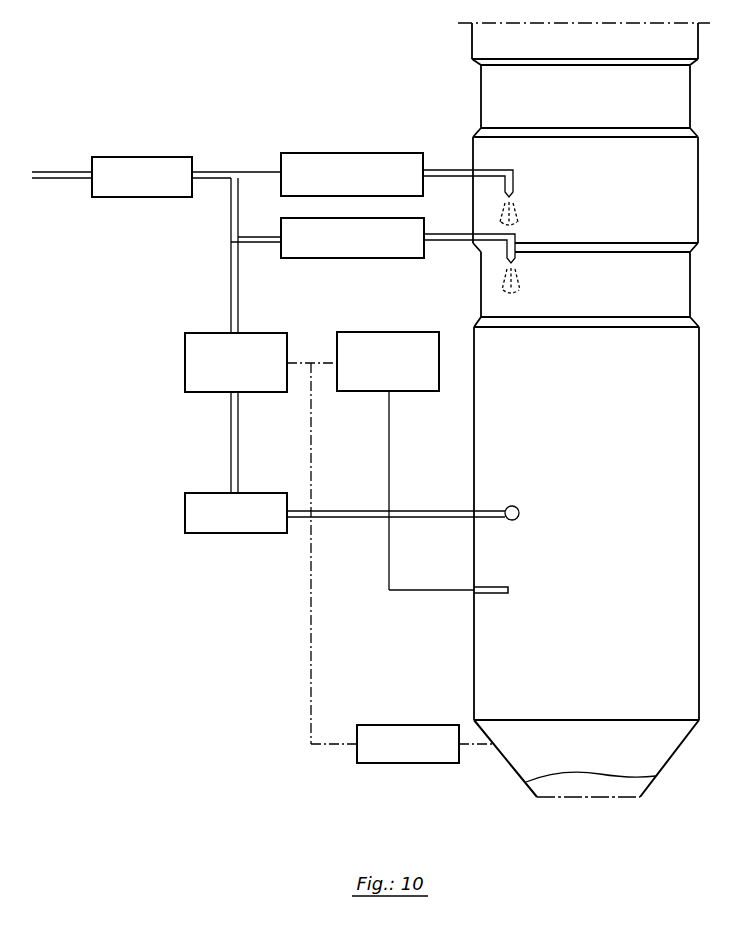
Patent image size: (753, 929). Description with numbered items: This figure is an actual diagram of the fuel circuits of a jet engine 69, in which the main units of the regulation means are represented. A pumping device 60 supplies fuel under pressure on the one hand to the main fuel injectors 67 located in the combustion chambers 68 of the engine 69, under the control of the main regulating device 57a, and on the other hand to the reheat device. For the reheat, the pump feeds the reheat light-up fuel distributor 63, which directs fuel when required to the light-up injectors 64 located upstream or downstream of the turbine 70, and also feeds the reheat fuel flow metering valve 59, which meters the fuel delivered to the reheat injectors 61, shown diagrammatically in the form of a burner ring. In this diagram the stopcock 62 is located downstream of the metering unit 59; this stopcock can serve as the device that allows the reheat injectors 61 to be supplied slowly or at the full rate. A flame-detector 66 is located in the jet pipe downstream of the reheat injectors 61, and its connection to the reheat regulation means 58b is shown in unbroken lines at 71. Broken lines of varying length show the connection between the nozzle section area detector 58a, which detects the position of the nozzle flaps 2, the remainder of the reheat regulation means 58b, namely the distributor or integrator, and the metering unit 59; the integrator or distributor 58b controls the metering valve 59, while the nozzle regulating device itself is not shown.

The nozzle flaps 2 is at (567, 410).
The main regulating device 57a is at (352, 174).
The nozzle section area detector 58a is at (408, 744).
The integrator or distributor 58b is at (388, 361).
The reheat fuel flow metering valve 59 is at (236, 362).
The pumping device 60 is at (112, 177).
The reheat injectors 61 is at (501, 503).
The stopcock 62 is at (236, 513).
The reheat light-up fuel distributor 63 is at (352, 238).
The light-up injectors 64 is at (516, 259).
The flame-detector 66 is at (497, 595).
The main fuel injectors 67 is at (514, 193).
The combustion chambers 68 is at (485, 155).
The engine 69 is at (480, 98).
The turbine 70 is at (488, 305).
The connection 71 is at (390, 494).